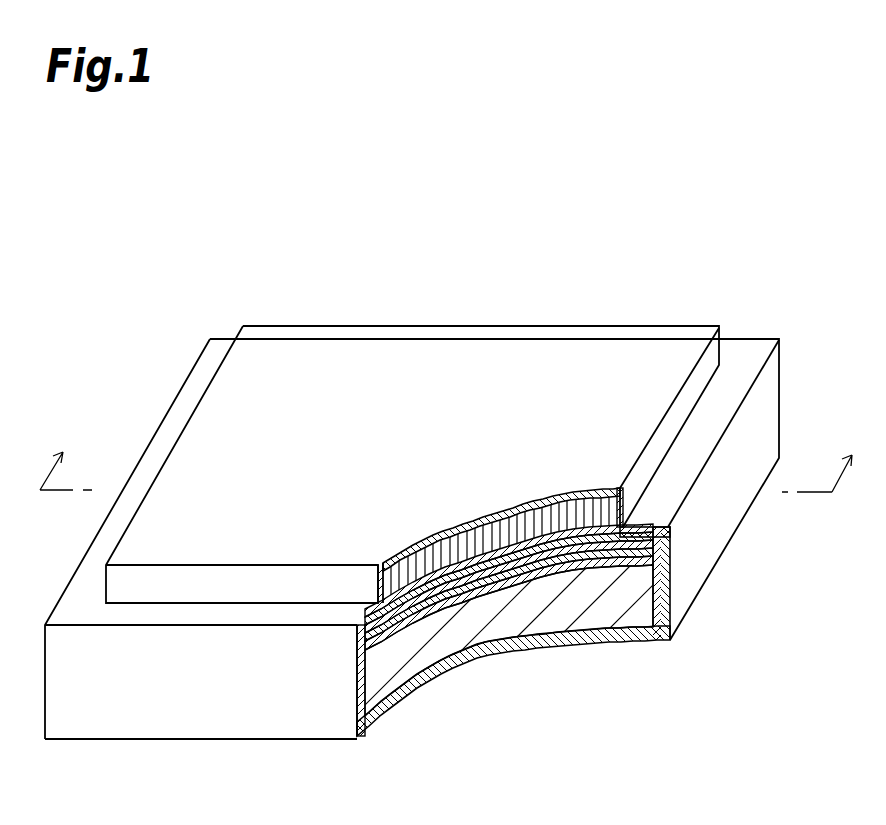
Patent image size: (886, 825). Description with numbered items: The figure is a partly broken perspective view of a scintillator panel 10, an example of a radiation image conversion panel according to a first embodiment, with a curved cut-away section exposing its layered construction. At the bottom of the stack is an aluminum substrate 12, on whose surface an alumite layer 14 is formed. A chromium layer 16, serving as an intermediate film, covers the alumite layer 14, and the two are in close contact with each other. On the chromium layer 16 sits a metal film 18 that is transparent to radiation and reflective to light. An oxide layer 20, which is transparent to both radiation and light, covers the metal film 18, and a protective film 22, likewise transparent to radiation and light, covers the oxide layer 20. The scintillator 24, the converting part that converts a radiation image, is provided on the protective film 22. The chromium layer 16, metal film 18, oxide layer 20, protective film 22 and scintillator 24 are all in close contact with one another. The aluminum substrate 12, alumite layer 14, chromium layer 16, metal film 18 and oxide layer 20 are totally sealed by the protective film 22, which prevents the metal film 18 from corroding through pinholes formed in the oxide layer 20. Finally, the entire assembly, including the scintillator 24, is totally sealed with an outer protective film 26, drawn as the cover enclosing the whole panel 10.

The scintillator panel 10 is at (290, 273).
The aluminum substrate 12 is at (472, 638).
The alumite layer 14 is at (625, 563).
The chromium layer 16 is at (588, 563).
The metal film 18 is at (558, 557).
The oxide layer 20 is at (513, 560).
The protective film 22 is at (670, 603).
The scintillator 24 is at (512, 528).
The protective film 26 is at (595, 352).